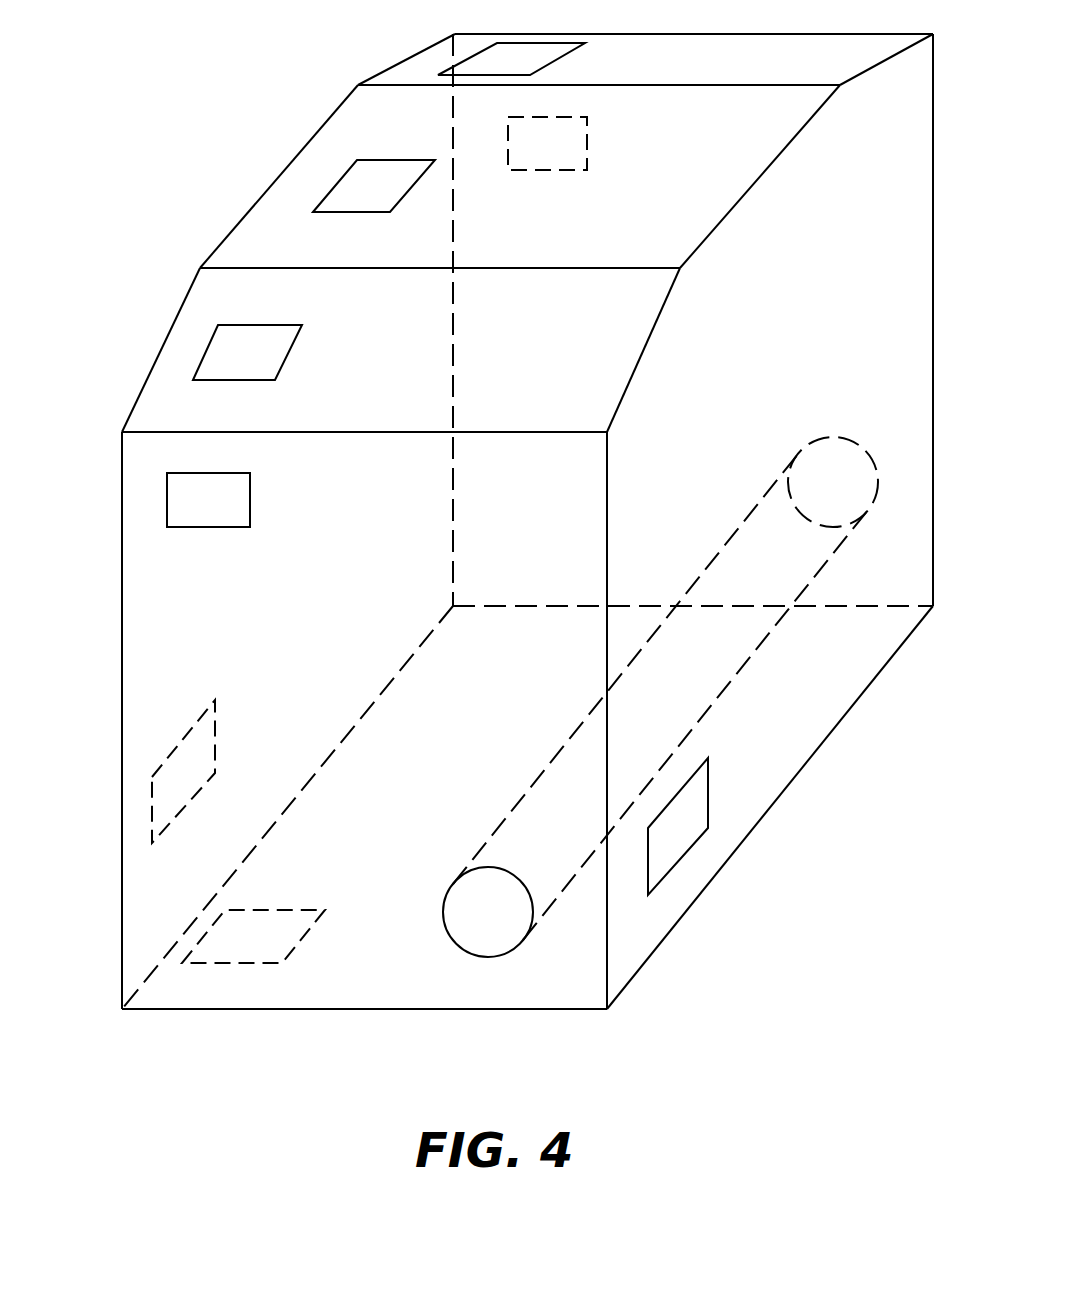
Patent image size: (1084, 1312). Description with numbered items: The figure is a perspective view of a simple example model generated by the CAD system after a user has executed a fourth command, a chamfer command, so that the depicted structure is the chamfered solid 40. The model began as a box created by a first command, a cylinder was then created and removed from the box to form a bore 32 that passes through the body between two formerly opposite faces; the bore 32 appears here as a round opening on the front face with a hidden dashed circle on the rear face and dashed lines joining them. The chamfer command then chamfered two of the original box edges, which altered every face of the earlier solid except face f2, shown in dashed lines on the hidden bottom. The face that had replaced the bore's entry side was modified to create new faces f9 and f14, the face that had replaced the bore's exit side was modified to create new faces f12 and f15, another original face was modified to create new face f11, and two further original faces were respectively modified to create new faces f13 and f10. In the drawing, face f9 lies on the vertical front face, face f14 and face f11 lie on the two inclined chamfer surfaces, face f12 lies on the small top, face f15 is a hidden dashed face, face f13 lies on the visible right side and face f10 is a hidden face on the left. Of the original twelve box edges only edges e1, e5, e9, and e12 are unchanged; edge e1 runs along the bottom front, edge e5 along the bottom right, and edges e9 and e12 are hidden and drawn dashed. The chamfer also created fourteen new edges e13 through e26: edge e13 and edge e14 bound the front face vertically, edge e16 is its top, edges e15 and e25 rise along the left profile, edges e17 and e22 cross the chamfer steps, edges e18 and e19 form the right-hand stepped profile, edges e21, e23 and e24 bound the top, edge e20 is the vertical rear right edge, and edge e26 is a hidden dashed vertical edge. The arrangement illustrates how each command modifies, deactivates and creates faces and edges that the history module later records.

The chamfered solid 40 is at (323, 100).
The bore 32 is at (503, 935).
The edge e1 is at (364, 1025).
The edge e5 is at (770, 807).
The edge e9 is at (693, 596).
The edge e12 is at (287, 807).
The new edge e13 is at (101, 720).
The new edge e14 is at (585, 720).
The new edge e15 is at (160, 350).
The new edge e16 is at (364, 448).
The new edge e17 is at (440, 283).
The new edge e18 is at (648, 350).
The new edge e19 is at (760, 176).
The new edge e20 is at (957, 320).
The new edge e21 is at (886, 62).
The new edge e22 is at (599, 99).
The new edge e23 is at (406, 59).
The new edge e24 is at (694, 21).
The new edge e25 is at (279, 176).
The new edge e26 is at (430, 320).
The face f2 is at (253, 936).
The new face f9 is at (208, 500).
The new face f10 is at (183, 771).
The new face f11 is at (374, 186).
The new face f12 is at (511, 59).
The new face f13 is at (678, 826).
The new face f14 is at (247, 352).
The new face f15 is at (547, 143).